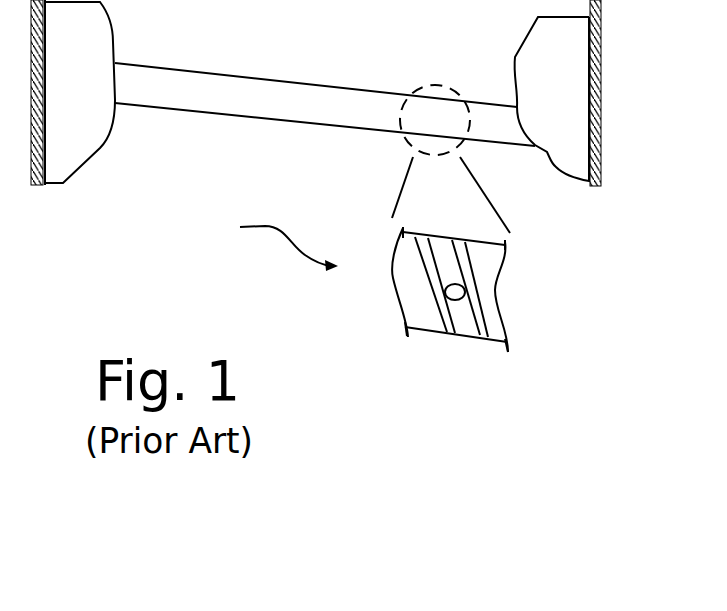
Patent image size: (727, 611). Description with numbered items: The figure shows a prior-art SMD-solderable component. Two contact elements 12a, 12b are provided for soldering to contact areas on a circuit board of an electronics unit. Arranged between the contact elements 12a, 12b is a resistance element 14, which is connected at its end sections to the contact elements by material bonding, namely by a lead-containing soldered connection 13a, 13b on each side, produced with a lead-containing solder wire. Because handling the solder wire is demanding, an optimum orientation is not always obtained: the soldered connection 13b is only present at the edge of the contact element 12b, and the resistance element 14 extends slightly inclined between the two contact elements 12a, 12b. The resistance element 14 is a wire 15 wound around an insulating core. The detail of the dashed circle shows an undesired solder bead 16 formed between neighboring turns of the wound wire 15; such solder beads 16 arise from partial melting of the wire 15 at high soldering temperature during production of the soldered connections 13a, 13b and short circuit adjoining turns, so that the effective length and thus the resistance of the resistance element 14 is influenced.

The contact element 12a is at (34, 195).
The contact element 12b is at (595, 202).
The soldered connection 13a is at (80, 92).
The soldered connection 13b is at (552, 99).
The resistance element 14 is at (150, 120).
The wire 15 is at (485, 338).
The solder beads 16 is at (445, 291).